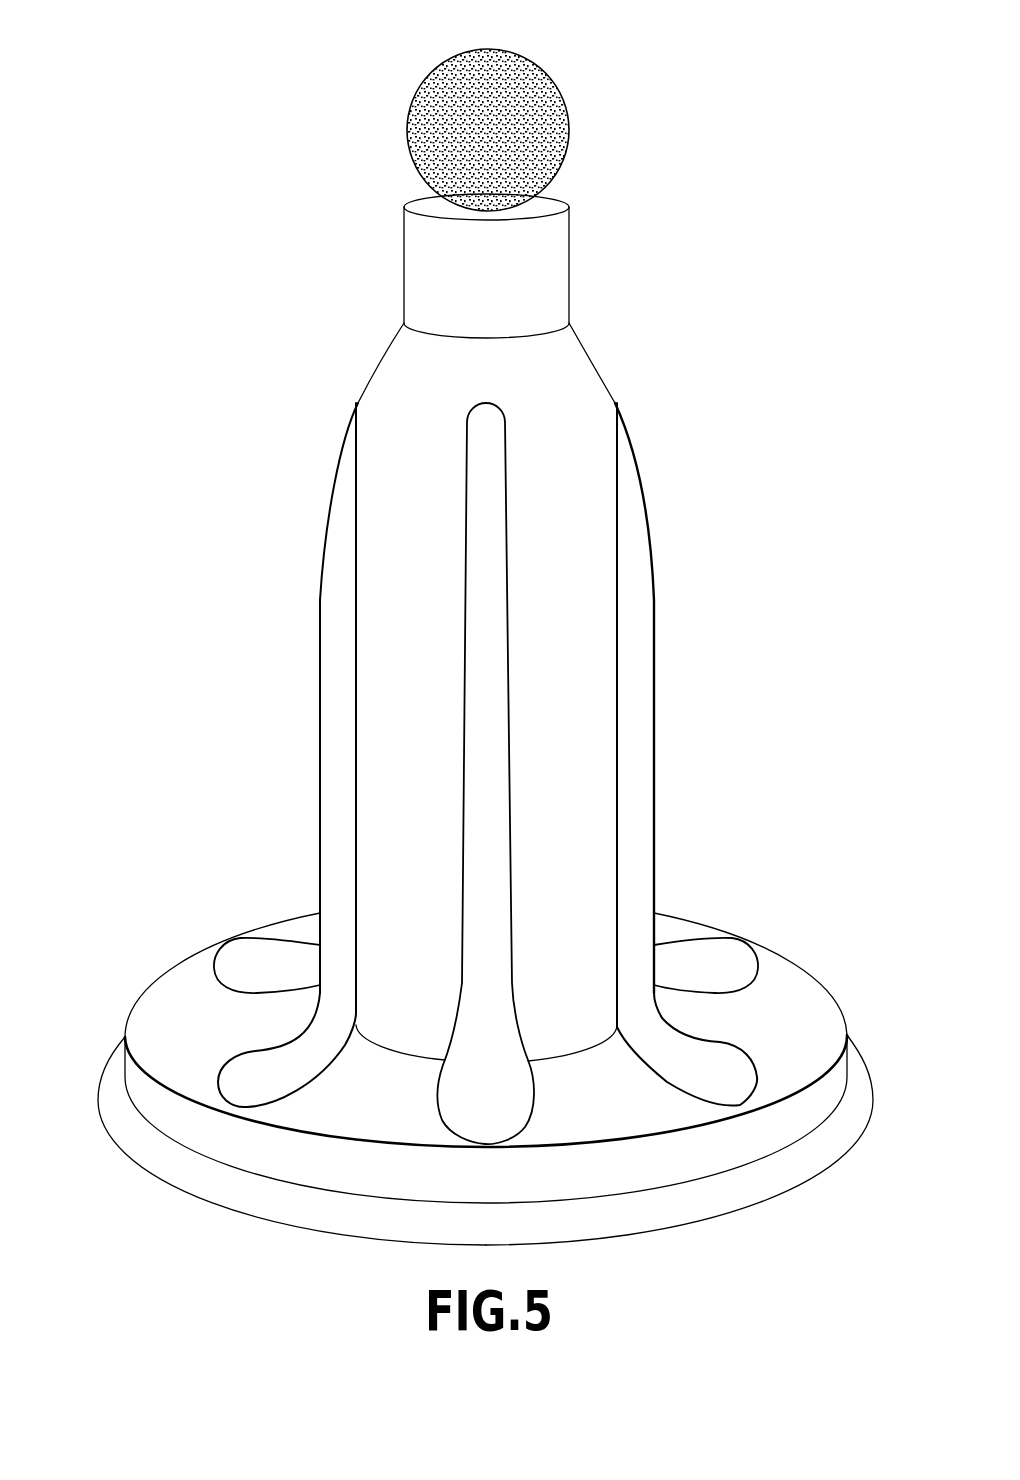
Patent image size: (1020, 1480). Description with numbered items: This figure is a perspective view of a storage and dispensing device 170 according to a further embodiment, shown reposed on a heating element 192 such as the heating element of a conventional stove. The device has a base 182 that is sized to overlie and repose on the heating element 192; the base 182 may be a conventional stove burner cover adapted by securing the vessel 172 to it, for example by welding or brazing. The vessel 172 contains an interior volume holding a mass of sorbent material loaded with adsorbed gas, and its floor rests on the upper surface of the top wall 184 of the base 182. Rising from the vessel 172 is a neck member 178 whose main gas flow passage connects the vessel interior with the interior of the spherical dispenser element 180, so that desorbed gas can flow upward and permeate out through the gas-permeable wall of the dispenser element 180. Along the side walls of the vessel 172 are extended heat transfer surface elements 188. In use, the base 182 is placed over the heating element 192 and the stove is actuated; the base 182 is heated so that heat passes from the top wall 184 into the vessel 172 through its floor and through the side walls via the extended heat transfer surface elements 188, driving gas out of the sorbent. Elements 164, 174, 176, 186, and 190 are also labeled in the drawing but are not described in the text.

The rib 164 is at (635, 447).
The storage and dispensing device 170 is at (613, 341).
The vessel 172 is at (587, 555).
The shoulder 174 is at (393, 380).
The body 176 is at (580, 932).
The neck member 178 is at (417, 249).
The spherical dispenser element 180 is at (505, 53).
The base 182 is at (820, 967).
The top wall 184 is at (660, 1118).
The flange 186 is at (210, 1147).
The extended heat transfer surface elements 188 is at (330, 648).
The rear leg 190 is at (237, 1058).
The heating element 192 is at (673, 1218).